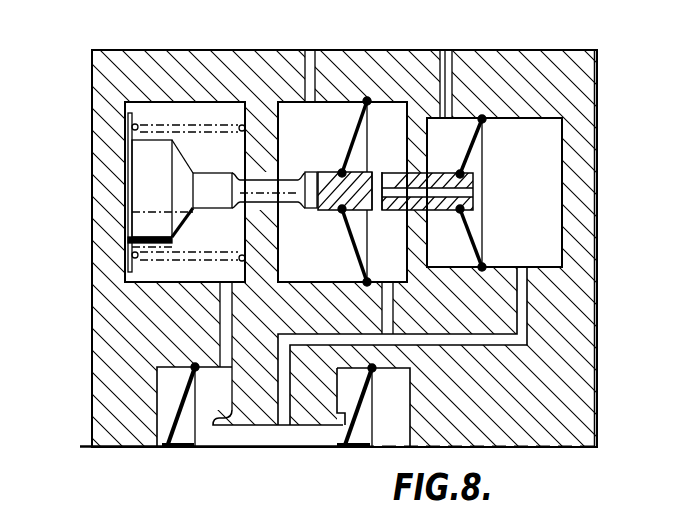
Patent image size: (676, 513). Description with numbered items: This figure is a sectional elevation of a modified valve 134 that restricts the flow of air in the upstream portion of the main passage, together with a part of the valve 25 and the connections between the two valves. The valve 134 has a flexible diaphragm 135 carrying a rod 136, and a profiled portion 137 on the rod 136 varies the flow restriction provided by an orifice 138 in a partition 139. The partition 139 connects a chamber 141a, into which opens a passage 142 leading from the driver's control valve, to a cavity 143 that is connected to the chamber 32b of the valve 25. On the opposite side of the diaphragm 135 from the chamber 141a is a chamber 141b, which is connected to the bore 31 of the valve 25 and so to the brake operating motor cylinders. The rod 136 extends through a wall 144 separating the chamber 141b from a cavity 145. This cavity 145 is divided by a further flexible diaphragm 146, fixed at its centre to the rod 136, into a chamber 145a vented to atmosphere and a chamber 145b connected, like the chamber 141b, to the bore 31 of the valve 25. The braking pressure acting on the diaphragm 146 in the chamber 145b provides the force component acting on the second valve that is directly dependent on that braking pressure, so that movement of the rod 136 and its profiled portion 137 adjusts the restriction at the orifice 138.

The valve 134 is at (92, 83).
The cavity 143 is at (152, 107).
The partition 139 is at (255, 224).
The profiled portion 137 is at (248, 170).
The orifice 138 is at (256, 170).
The passage 142 is at (311, 73).
The flexible diaphragm 135 is at (376, 168).
The rod 136 is at (322, 168).
The chamber 141a is at (312, 262).
The chamber 141b is at (395, 123).
The wall 144 is at (420, 213).
The cavity 145 is at (532, 117).
The chamber 145a is at (453, 132).
The chamber 145b is at (543, 247).
The further flexible diaphragm 146 is at (470, 153).
The valve 25 is at (152, 410).
The chamber 32b is at (208, 393).
The bore 31 is at (300, 427).